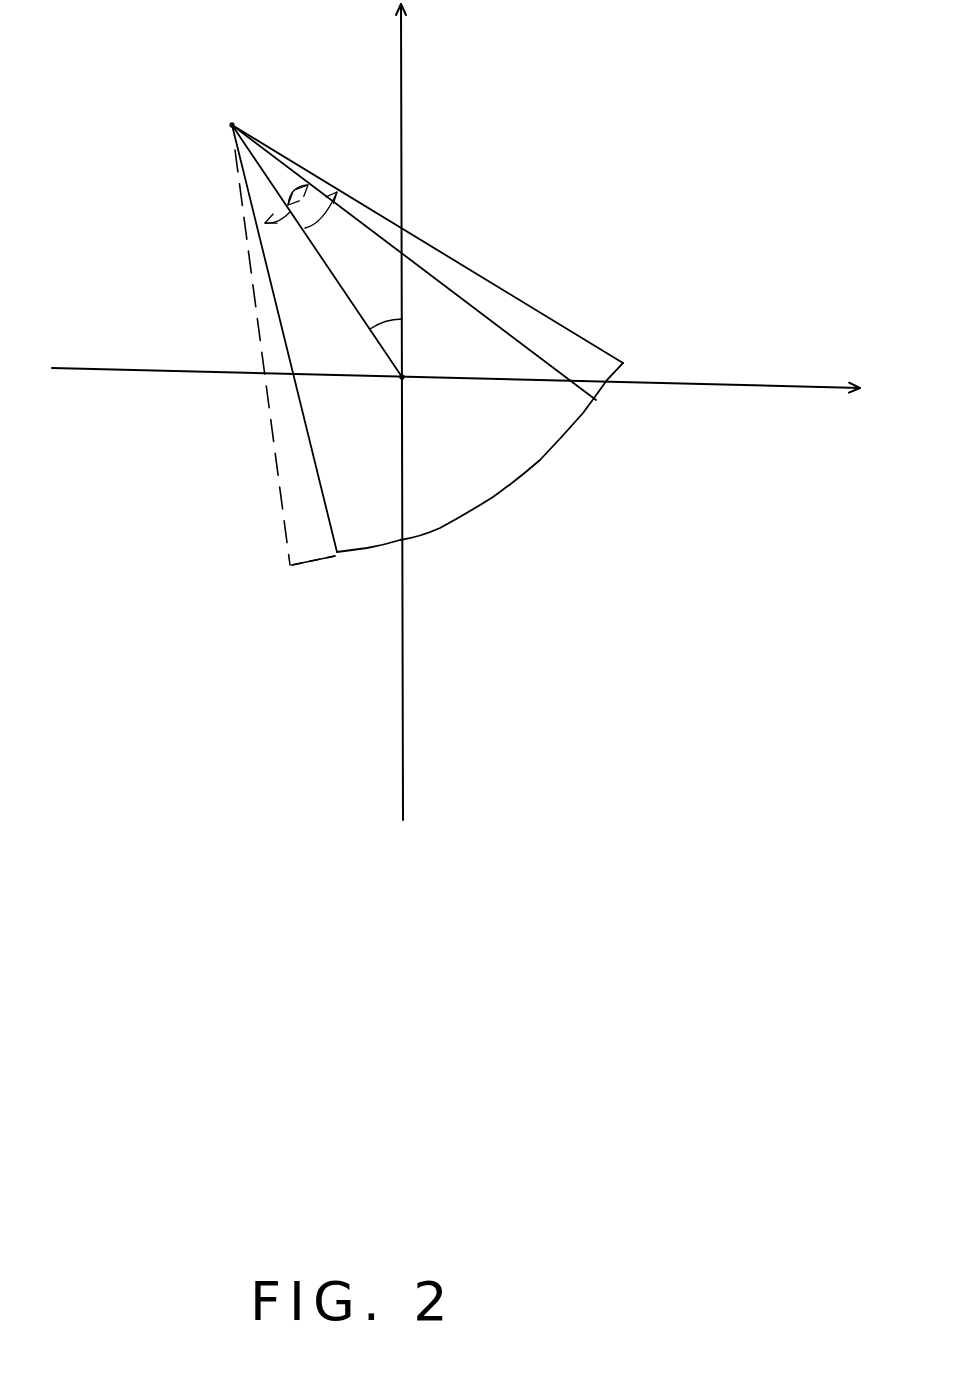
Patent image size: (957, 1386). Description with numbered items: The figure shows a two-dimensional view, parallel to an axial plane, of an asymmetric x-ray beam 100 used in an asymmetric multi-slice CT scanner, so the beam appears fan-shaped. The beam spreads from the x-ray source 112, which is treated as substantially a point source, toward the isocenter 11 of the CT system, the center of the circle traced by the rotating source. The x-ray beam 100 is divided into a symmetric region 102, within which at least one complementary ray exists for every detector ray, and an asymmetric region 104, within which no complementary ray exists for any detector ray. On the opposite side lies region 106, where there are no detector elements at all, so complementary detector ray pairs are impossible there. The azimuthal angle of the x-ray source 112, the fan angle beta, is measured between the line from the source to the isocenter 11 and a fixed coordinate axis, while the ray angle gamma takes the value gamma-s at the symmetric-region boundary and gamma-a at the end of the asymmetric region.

The asymmetric x-ray beam 100 is at (492, 573).
The symmetric region 102 is at (352, 580).
The asymmetric region 104 is at (603, 430).
The region 106 is at (343, 583).
The x-ray source 112 is at (237, 114).
The isocenter 11 is at (408, 372).